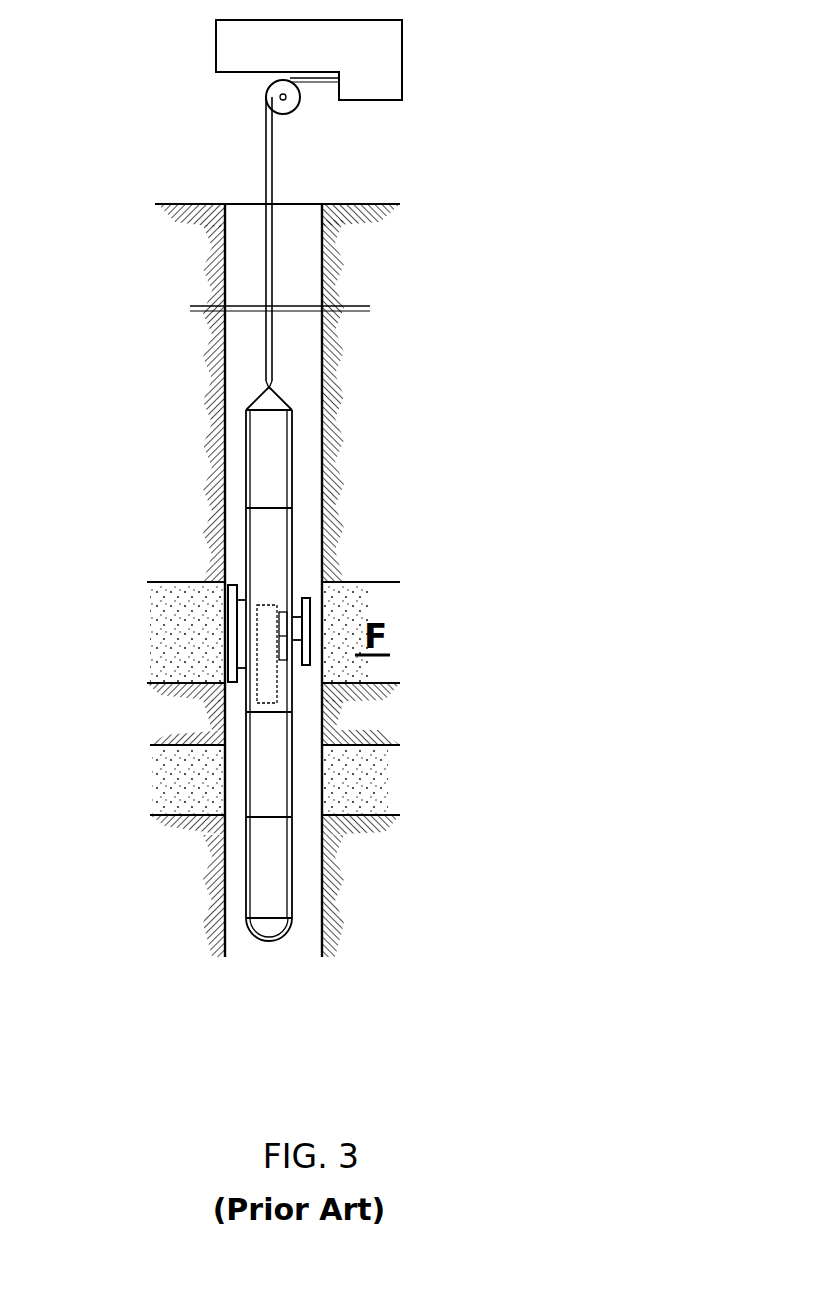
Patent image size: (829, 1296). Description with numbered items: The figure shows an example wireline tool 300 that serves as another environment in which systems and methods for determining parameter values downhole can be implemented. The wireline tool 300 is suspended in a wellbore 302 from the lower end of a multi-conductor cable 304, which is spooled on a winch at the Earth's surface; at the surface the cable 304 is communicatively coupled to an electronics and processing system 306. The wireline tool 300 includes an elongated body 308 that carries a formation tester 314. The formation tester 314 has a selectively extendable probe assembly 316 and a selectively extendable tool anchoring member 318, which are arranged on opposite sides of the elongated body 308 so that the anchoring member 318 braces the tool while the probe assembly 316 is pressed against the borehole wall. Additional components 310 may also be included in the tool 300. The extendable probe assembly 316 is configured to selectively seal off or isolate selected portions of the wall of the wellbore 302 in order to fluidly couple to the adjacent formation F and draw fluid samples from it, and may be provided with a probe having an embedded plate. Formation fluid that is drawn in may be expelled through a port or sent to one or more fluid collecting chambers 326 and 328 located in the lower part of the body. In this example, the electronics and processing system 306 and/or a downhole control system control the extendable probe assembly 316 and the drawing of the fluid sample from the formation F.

The wireline tool 300 is at (412, 536).
The wellbore 302 is at (313, 382).
The multi-conductor cable 304 is at (277, 270).
The electronics and processing system 306 is at (380, 70).
The elongated body 308 is at (262, 478).
The additional components 310 is at (290, 535).
The formation tester 314 is at (248, 585).
The extendable probe assembly 316 is at (312, 618).
The tool anchoring member 318 is at (230, 650).
The fluid collecting chamber 326 is at (278, 790).
The fluid collecting chamber 328 is at (275, 878).